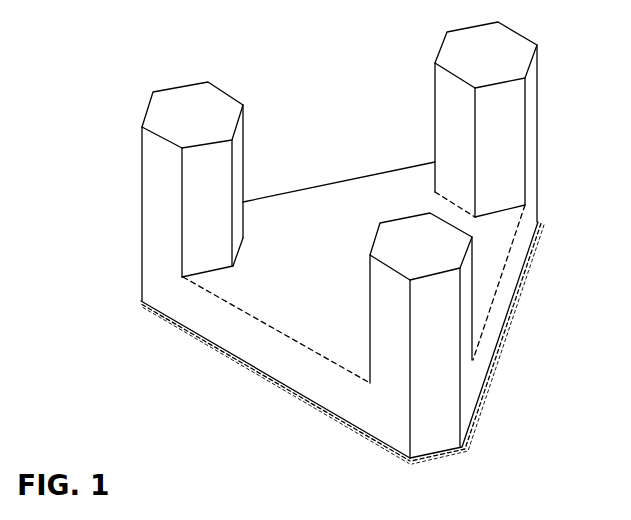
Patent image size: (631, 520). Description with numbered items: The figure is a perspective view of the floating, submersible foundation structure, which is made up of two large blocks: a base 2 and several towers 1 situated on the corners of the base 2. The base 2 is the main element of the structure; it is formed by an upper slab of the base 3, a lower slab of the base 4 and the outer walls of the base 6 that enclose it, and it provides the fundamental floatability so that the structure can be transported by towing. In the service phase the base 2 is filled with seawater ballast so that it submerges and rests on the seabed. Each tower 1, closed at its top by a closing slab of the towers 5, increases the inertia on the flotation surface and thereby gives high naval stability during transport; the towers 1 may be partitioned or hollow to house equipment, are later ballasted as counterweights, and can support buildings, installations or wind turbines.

The tower 1 is at (516, 114).
The base 2 is at (514, 253).
The upper slab of the base 3 is at (211, 284).
The lower slab of the base 4 is at (323, 411).
The closing slab of the towers 5 is at (184, 100).
The outer walls of the base 6 is at (259, 350).